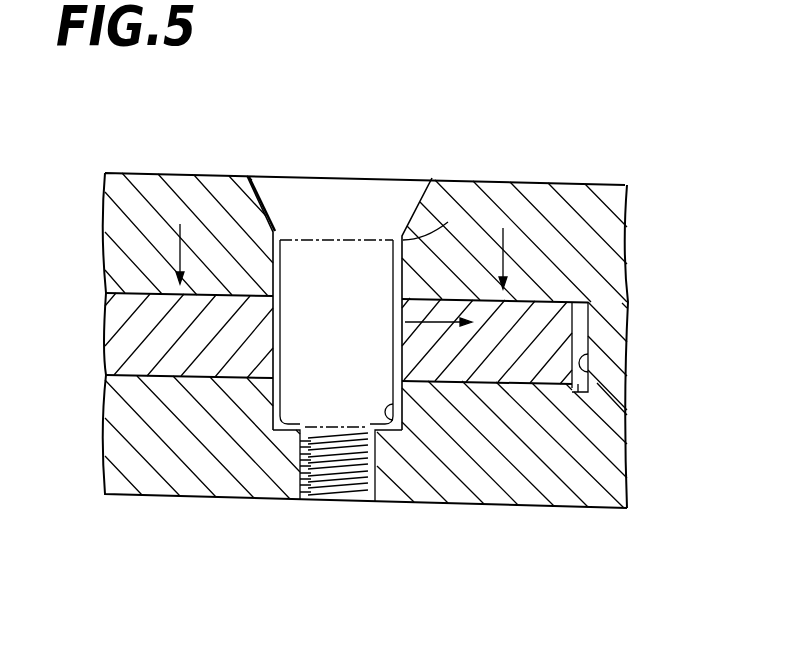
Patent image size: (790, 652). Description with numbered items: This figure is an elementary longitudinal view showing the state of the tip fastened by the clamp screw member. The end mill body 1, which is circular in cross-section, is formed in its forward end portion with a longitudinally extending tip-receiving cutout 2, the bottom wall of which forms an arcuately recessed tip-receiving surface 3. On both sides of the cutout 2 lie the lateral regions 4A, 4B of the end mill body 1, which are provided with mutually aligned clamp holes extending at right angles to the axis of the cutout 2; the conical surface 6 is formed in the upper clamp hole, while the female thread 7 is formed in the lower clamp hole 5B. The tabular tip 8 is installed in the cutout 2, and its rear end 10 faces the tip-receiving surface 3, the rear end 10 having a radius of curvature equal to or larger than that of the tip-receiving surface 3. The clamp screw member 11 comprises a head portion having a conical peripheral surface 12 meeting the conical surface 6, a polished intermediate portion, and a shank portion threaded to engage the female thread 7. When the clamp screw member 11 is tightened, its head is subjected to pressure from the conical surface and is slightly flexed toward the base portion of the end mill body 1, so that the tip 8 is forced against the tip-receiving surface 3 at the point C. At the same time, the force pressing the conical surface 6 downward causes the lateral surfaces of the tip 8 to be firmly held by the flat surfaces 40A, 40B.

The end mill body 1 is at (559, 185).
The tip-receiving cutout 2 is at (592, 386).
The tip-receiving surface 3 is at (590, 370).
The lateral region 4A is at (152, 186).
The lateral region 4B is at (157, 472).
The clamp hole 5B is at (437, 490).
The conical surface 6 is at (272, 212).
The female thread 7 is at (362, 503).
The tabular tip 8 is at (130, 328).
The rear end 10 is at (562, 345).
The clamp screw member 11 is at (281, 176).
The conical peripheral surface 12 is at (455, 213).
The flat surface 40A is at (128, 300).
The flat surface 40B is at (126, 370).
The point C is at (393, 312).